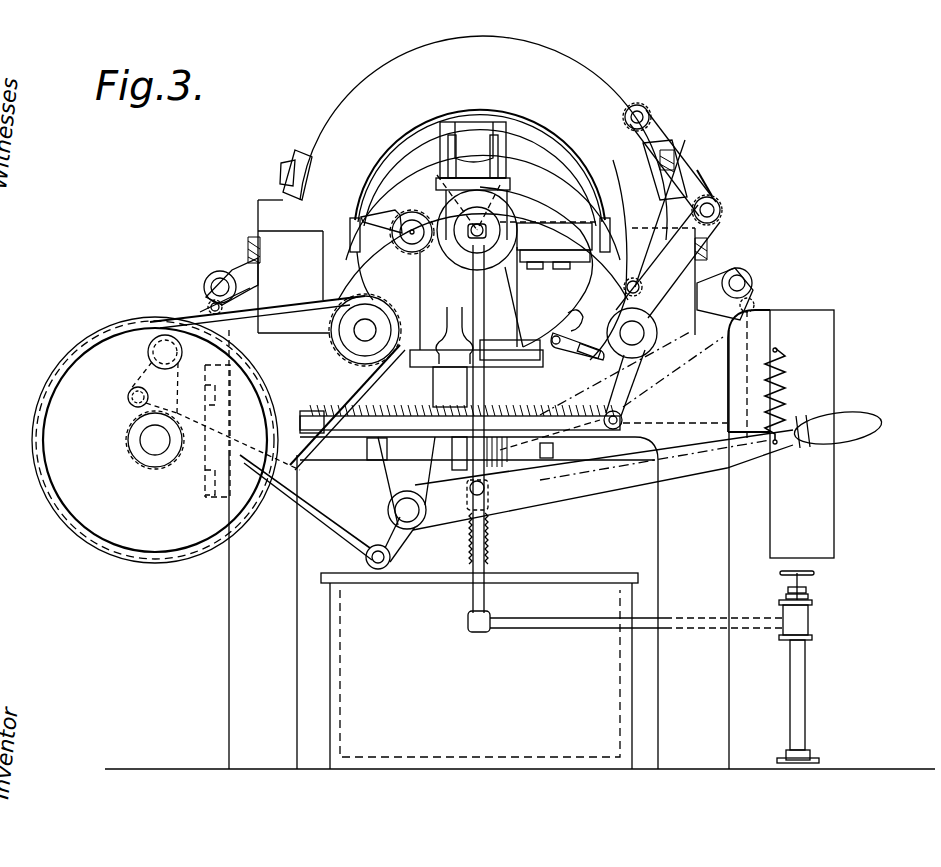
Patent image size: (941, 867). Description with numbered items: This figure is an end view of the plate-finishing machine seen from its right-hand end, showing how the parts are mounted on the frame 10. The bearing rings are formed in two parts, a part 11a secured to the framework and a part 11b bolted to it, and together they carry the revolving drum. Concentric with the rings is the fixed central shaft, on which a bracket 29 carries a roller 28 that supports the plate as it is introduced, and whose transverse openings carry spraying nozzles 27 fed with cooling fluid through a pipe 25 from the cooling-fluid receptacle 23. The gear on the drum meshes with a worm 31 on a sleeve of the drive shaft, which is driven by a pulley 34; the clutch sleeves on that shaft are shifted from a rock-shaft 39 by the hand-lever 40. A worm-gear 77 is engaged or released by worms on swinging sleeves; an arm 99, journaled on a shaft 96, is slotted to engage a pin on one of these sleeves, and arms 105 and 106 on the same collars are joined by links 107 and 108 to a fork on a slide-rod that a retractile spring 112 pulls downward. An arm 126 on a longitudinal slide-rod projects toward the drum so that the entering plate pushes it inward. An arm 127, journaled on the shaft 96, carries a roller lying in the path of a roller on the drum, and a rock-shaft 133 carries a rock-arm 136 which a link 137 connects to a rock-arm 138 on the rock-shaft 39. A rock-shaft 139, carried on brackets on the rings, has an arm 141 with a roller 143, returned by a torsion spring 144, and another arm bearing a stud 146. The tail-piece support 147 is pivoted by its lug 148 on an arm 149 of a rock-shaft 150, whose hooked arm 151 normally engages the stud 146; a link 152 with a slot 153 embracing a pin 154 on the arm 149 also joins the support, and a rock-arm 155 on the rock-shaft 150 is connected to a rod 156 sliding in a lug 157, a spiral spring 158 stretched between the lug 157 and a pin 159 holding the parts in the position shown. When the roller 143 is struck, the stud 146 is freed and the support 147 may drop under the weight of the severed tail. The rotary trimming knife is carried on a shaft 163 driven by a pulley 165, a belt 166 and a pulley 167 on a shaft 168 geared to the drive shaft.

The frame 10 is at (240, 568).
The bearing ring part 11a is at (283, 253).
The bearing ring part 11b is at (470, 63).
The cooling fluid receptacle 23 is at (520, 592).
The pipe 25 is at (487, 550).
The spraying nozzle 27 is at (470, 210).
The roller 28 is at (478, 128).
The bracket 29 is at (451, 158).
The worm 31 is at (498, 470).
The pulley 34 is at (827, 507).
The rock-shaft 39 is at (407, 500).
The hand-lever 40 is at (612, 477).
The worm-gear 77 is at (788, 396).
The shaft 96 is at (214, 280).
The arm 99 is at (247, 264).
The arm 105 is at (205, 300).
The arm 106 is at (766, 286).
The link 107 is at (378, 358).
The link 108 is at (663, 377).
The retractile spring 112 is at (778, 306).
The arm 126 is at (385, 218).
The arm 127 is at (238, 260).
The rock shaft 133 is at (162, 354).
The rock-arm 136 is at (140, 374).
The link 137 is at (323, 517).
The rock-arm 138 is at (400, 538).
The rock-shaft 139 is at (715, 205).
The arm 141 is at (688, 167).
The roller 143 is at (645, 110).
The torsion spring 144 is at (711, 190).
The stud 146 is at (672, 157).
The tail-piece support 147 is at (540, 350).
The lug 148 is at (505, 418).
The arm 149 is at (622, 421).
The rock-shaft 150 is at (640, 332).
The hooked arm 151 is at (720, 264).
The link 152 is at (572, 318).
The slot 153 is at (600, 347).
The pin 154 is at (663, 396).
The rock-arm 155 is at (620, 405).
The rod 156 is at (593, 427).
The apertured lug 157 is at (320, 413).
The spiral spring 158 is at (372, 420).
The pin 159 is at (593, 430).
The shaft 163 is at (354, 330).
The pulley 165 is at (373, 303).
The belt 166 is at (296, 303).
The pulley 167 is at (70, 407).
The shaft 168 is at (152, 452).